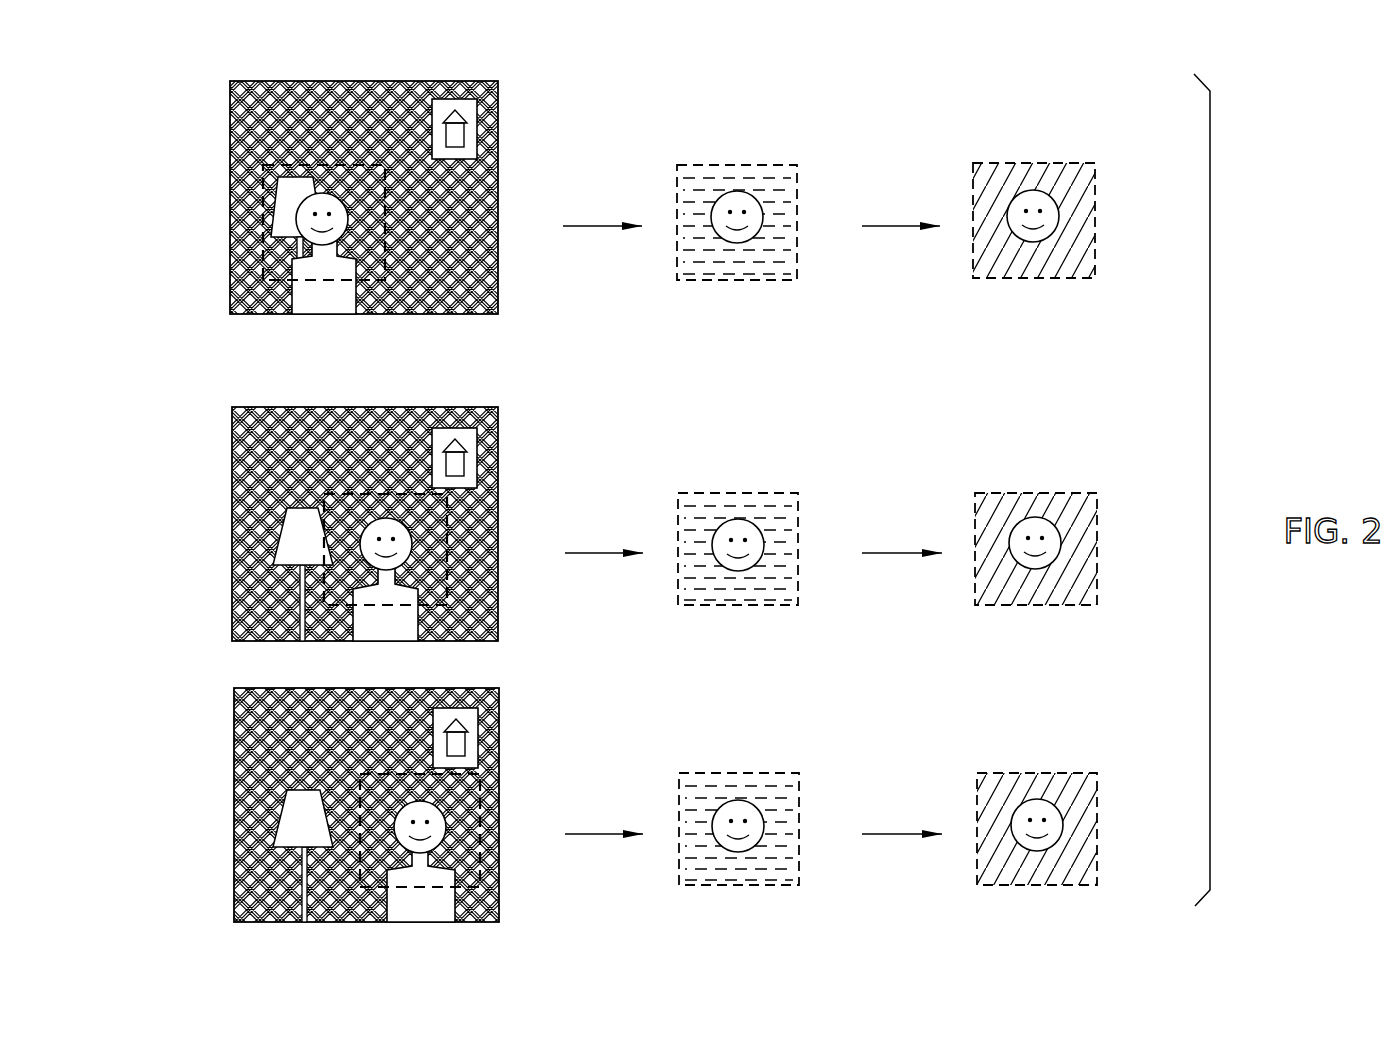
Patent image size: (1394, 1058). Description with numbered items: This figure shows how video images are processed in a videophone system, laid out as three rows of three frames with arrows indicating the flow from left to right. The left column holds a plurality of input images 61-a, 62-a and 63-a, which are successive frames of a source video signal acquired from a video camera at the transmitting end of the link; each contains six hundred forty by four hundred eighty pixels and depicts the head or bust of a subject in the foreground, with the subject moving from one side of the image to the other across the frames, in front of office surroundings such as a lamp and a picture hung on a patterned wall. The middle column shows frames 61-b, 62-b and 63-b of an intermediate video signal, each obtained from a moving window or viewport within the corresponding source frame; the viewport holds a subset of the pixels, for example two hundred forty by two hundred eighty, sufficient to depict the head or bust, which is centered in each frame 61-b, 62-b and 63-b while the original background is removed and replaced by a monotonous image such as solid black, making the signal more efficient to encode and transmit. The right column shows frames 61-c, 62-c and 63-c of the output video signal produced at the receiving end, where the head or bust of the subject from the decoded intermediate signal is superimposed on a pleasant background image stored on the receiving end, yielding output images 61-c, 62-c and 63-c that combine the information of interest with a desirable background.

The input image 61-a is at (347, 204).
The intermediate video signal frame 61-b is at (748, 217).
The output video signal frame 61-c is at (1071, 201).
The input image 62-a is at (347, 518).
The intermediate video signal frame 62-b is at (774, 530).
The output video signal frame 62-c is at (1072, 530).
The input image 63-a is at (347, 799).
The intermediate video signal frame 63-b is at (776, 810).
The output video signal frame 63-c is at (1073, 810).